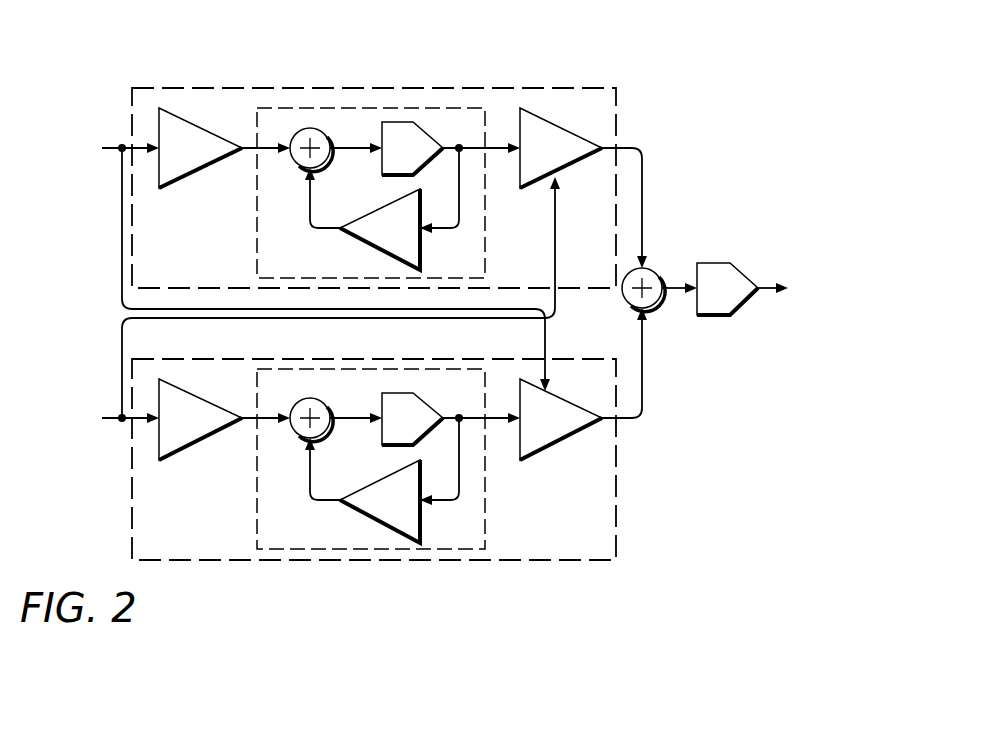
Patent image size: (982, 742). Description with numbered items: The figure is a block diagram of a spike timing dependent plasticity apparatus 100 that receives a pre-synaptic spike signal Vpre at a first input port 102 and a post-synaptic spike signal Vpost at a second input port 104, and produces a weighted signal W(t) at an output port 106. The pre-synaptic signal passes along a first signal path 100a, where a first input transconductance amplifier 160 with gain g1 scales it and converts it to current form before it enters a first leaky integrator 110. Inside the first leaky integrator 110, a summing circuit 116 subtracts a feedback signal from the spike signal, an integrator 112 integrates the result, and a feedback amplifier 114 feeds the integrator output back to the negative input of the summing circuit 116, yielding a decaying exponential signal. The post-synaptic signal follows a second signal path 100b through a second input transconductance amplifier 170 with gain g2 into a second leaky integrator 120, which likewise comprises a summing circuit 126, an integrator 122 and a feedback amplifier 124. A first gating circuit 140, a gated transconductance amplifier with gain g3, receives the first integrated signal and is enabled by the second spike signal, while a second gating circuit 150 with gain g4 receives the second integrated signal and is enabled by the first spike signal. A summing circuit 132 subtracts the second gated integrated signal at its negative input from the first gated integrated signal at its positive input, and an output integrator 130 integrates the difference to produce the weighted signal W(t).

The spike timing dependent plasticity (STDP) apparatus 100 is at (702, 44).
The first signal path 100a is at (630, 125).
The second signal path 100b is at (630, 520).
The first input port 102 is at (106, 123).
The second input port 104 is at (106, 396).
The output port 106 is at (772, 307).
The first leaky integrator 110 is at (243, 200).
The integrator 112 is at (398, 122).
The feedback amplifier 114 is at (377, 248).
The summing circuit 116 is at (312, 128).
The second leaky integrator 120 is at (243, 470).
The integrator 122 is at (398, 393).
The feedback amplifier 124 is at (377, 520).
The summing circuit 126 is at (312, 398).
The output integrator 130 is at (713, 263).
The summing circuit 132 is at (658, 302).
The first gating circuit 140 is at (555, 125).
The second gating circuit 150 is at (553, 445).
The first input transconductance amplifier 160 is at (190, 123).
The second input transconductance amplifier 170 is at (190, 393).